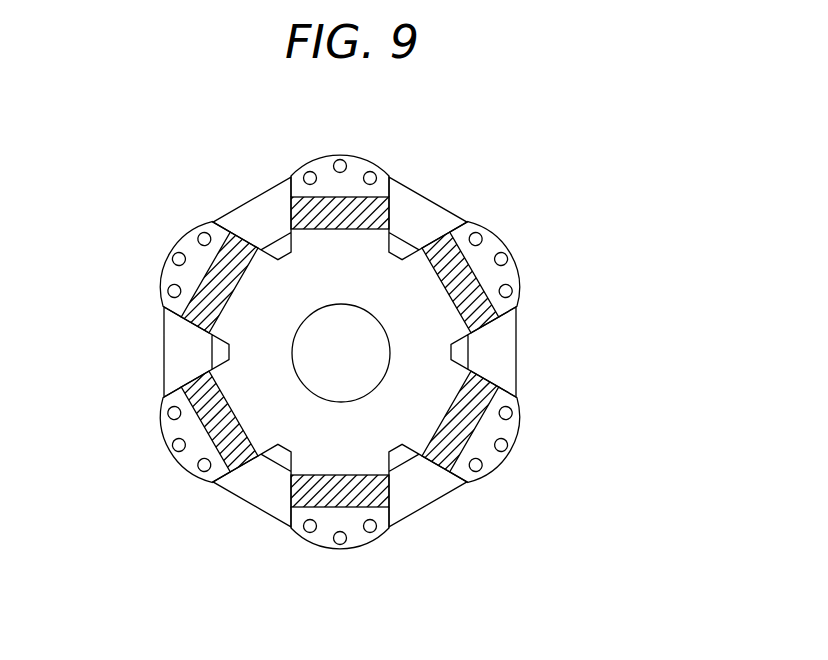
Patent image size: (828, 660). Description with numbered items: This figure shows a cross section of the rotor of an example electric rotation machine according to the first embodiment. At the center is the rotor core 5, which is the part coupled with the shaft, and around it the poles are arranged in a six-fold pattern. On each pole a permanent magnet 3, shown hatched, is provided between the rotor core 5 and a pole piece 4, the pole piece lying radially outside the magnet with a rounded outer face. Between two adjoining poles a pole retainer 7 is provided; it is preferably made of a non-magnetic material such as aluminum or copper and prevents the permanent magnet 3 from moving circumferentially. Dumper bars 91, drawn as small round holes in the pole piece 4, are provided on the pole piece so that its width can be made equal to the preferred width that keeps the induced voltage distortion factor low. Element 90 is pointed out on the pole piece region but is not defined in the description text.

The permanent magnet 3 is at (472, 290).
The pole piece 4 is at (508, 393).
The rotor core 5 is at (380, 273).
The pole retainer 7 is at (175, 351).
The segment flange 90 is at (363, 157).
The dumper bars 91 is at (379, 178).